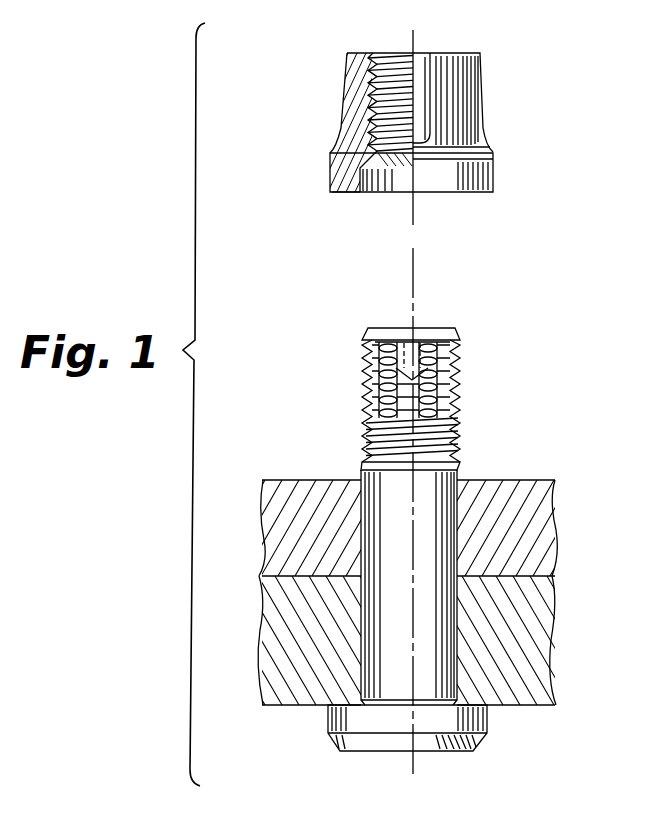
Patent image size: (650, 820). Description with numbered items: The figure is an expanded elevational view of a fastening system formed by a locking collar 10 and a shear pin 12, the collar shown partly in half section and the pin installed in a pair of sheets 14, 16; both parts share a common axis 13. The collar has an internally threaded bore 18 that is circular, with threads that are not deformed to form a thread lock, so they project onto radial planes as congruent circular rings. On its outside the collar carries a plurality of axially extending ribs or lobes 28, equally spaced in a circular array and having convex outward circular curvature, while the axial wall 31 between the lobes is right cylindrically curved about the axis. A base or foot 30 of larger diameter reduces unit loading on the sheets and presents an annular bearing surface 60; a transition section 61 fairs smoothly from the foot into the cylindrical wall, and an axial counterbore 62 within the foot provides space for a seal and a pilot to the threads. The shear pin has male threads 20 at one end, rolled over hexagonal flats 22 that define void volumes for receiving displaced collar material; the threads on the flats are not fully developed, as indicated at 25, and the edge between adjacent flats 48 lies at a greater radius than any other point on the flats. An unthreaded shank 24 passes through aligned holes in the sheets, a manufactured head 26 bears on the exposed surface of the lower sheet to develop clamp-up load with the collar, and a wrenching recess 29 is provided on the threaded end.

The locking collar 10 is at (462, 97).
The shear pin 12 is at (413, 545).
The common axis 13 is at (414, 286).
The sheet 14 is at (543, 523).
The sheet 16 is at (545, 688).
The internally threaded bore 18 is at (382, 53).
The male threads 20 is at (363, 442).
The hexagonal flats 22 is at (453, 338).
The unthreaded shank 24 is at (452, 698).
The partially developed threads 25 is at (362, 405).
The manufactured head 26 is at (455, 740).
The ribs or lobes 28 is at (424, 70).
The wrenching recess 29 is at (401, 325).
The base or foot 30 is at (483, 174).
The axial wall 31 is at (472, 72).
The edge between adjacent flats 48 is at (447, 378).
The annular bearing surface 60 is at (350, 192).
The transition section 61 is at (477, 137).
The axial counterbore 62 is at (377, 192).